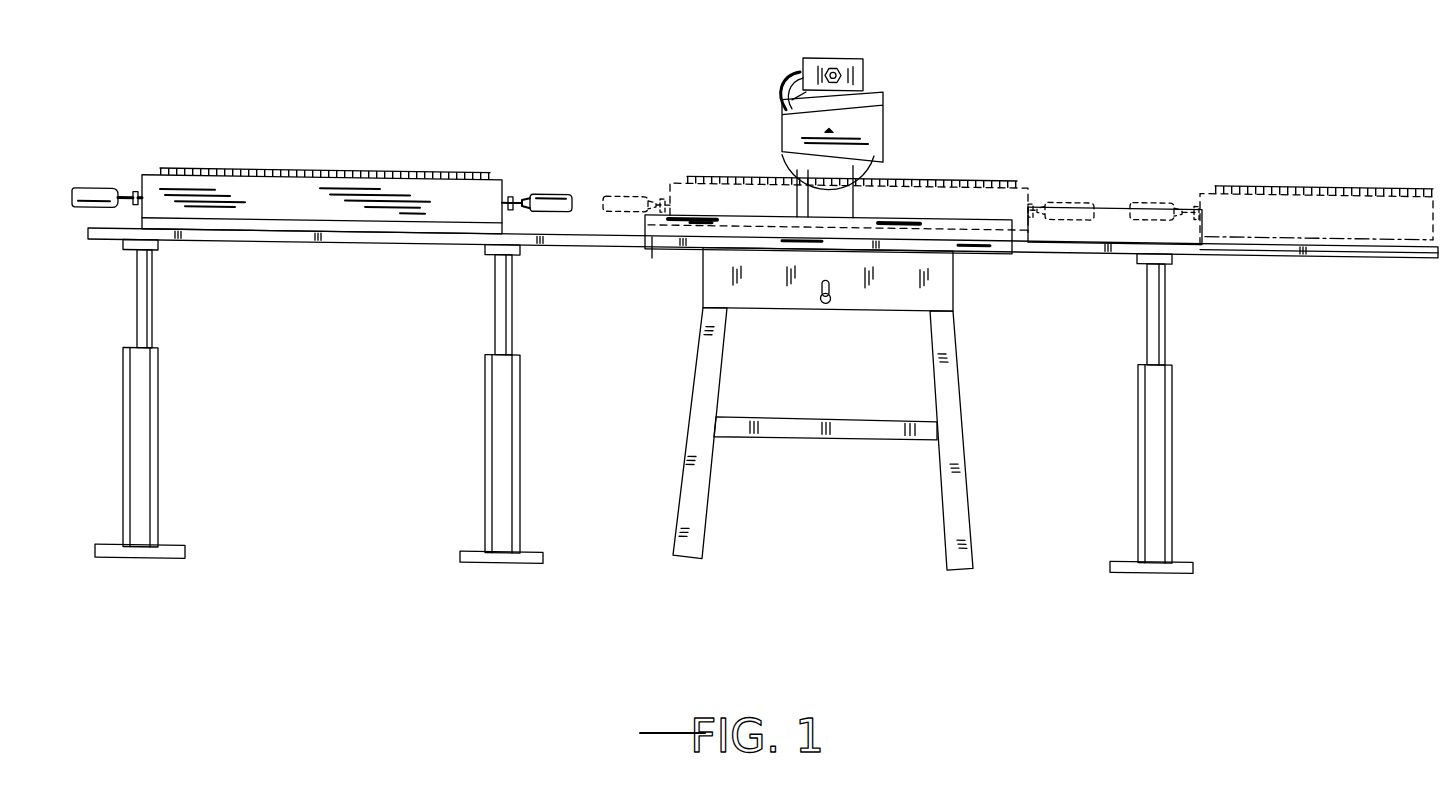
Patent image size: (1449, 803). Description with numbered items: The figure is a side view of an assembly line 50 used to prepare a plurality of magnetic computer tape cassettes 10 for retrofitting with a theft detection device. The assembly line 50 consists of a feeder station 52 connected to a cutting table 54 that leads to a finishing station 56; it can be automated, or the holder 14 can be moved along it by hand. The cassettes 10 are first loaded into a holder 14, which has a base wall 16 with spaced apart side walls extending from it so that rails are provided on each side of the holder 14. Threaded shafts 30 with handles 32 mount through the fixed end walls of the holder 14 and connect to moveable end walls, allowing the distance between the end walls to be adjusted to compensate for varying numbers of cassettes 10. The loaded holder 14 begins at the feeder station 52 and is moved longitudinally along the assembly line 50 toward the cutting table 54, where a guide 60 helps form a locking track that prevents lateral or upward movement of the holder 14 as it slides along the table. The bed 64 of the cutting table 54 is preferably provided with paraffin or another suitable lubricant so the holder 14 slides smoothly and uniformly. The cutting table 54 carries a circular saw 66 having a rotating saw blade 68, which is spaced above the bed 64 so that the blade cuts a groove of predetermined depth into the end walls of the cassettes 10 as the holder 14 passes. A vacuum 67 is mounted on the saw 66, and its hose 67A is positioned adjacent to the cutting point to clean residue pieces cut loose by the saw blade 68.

The assembly line 50 is at (755, 288).
The magnetic computer tape cassettes 10 is at (277, 166).
The holder 14 is at (438, 192).
The base wall 16 is at (288, 219).
The threaded shafts 30 is at (135, 190).
The handles 32 is at (85, 186).
The feeder station 52 is at (373, 240).
The cutting table 54 is at (713, 283).
The finishing station 56 is at (1266, 244).
The guide 60 is at (652, 229).
The bed 64 is at (980, 241).
The circular saw 66 is at (870, 107).
The vacuum 67 is at (812, 50).
The hose 67A is at (792, 84).
The saw blade 68 is at (850, 158).